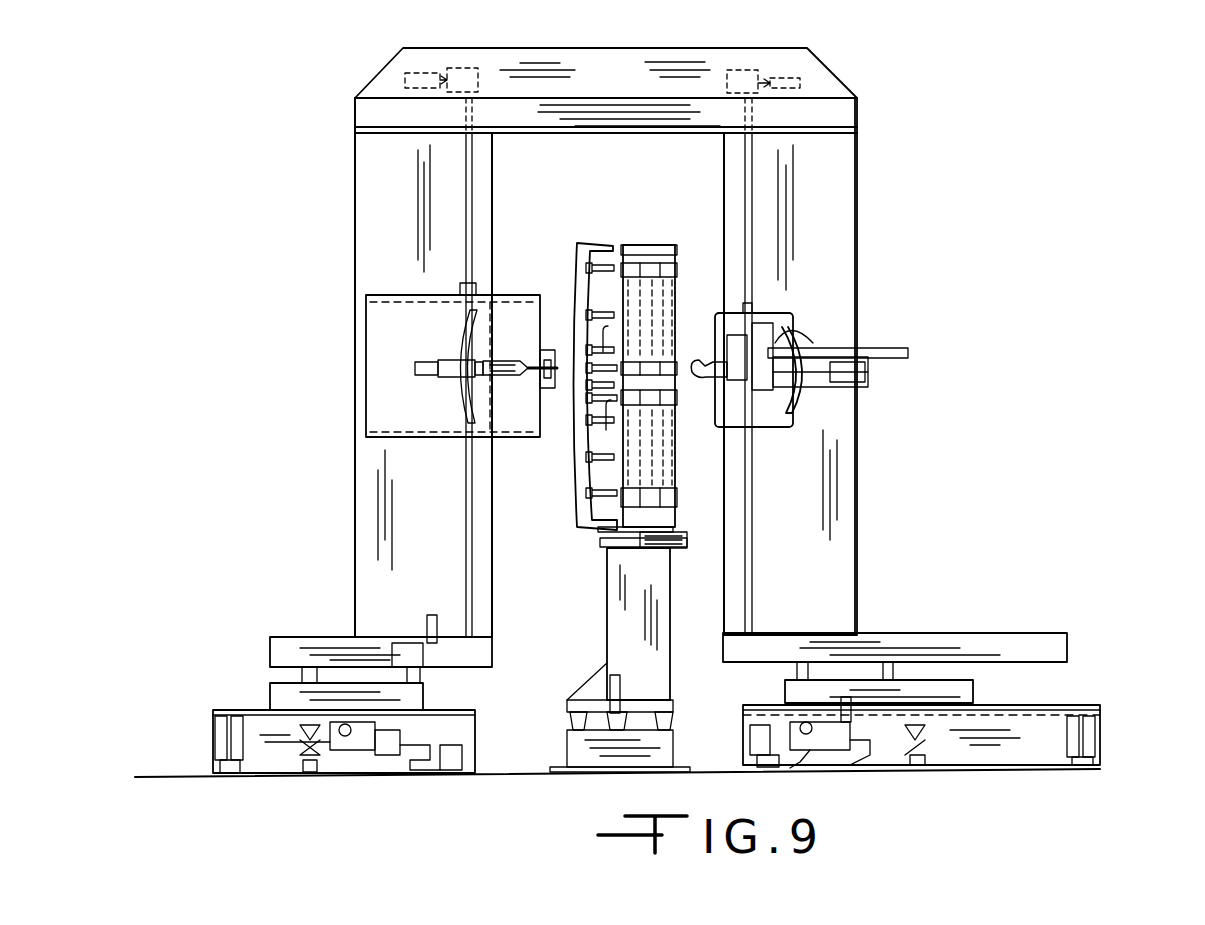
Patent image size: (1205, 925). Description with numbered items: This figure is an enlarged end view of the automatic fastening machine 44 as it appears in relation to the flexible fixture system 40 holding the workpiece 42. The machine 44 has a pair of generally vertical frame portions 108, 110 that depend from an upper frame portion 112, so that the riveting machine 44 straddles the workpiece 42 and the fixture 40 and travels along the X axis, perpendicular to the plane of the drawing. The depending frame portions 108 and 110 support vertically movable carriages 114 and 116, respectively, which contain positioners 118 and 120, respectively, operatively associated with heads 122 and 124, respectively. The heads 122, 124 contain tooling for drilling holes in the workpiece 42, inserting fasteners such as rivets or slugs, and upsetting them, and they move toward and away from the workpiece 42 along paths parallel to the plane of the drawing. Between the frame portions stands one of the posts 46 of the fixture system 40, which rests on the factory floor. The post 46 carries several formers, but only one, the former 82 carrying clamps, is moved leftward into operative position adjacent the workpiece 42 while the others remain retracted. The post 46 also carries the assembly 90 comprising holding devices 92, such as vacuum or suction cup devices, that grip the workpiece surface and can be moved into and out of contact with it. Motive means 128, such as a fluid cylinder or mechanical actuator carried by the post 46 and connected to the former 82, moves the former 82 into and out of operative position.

The flexible fixture system 40 is at (668, 404).
The workpiece 42 is at (660, 364).
The automatic fastening machine 44 is at (860, 88).
The post 46 is at (622, 620).
The former 82 is at (588, 472).
The assembly 90 is at (668, 450).
The holding devices 92 is at (578, 413).
The vertical frame portion 108 is at (396, 163).
The vertical frame portion 110 is at (824, 213).
The upper frame portion 112 is at (605, 80).
The vertically movable carriage 114 is at (375, 294).
The vertically movable carriage 116 is at (800, 308).
The positioner 118 is at (451, 387).
The positioner 120 is at (810, 406).
The head 122 is at (552, 330).
The head 124 is at (700, 357).
The motive means 128 is at (640, 552).